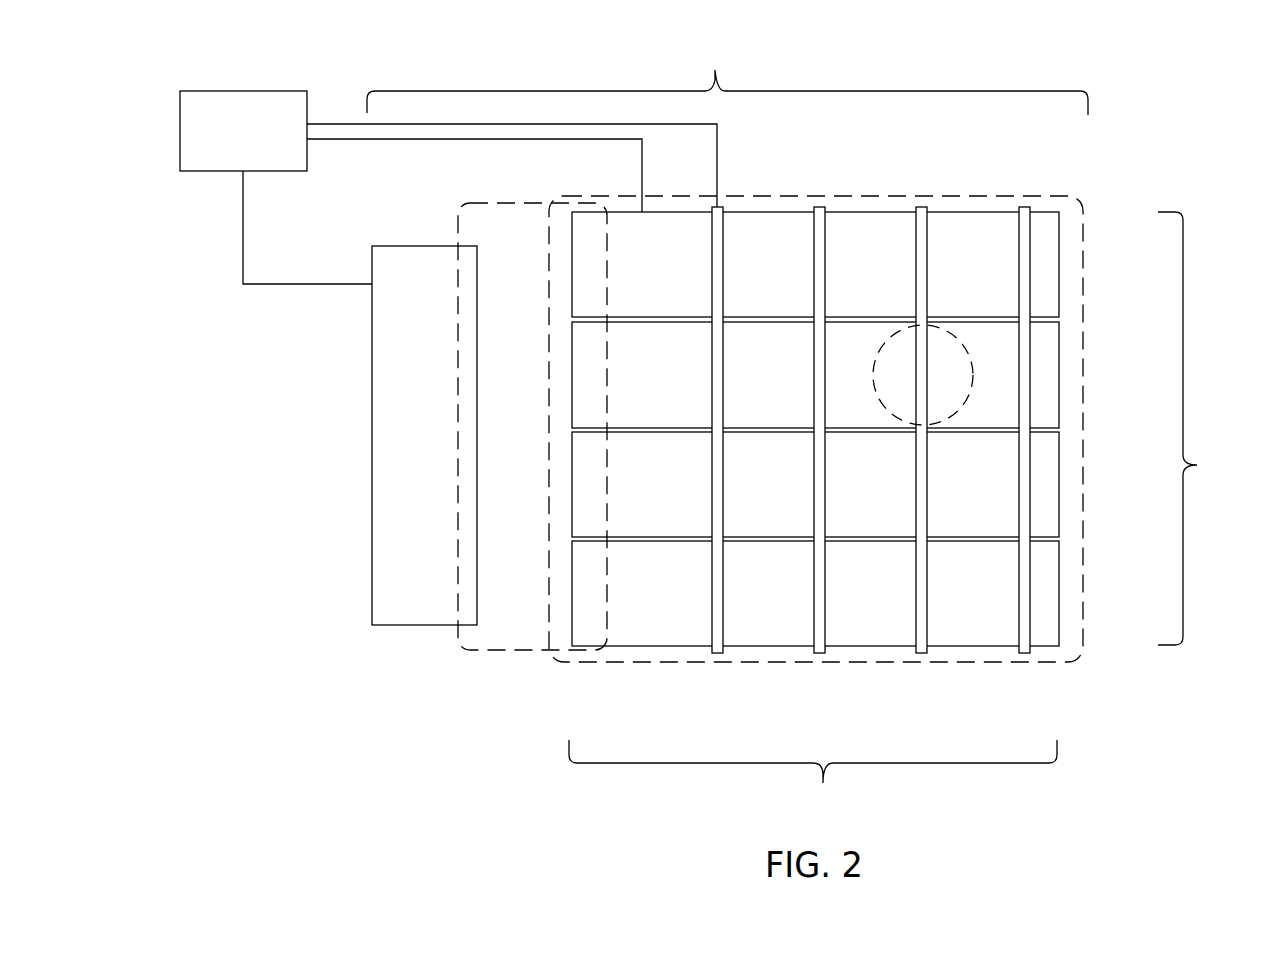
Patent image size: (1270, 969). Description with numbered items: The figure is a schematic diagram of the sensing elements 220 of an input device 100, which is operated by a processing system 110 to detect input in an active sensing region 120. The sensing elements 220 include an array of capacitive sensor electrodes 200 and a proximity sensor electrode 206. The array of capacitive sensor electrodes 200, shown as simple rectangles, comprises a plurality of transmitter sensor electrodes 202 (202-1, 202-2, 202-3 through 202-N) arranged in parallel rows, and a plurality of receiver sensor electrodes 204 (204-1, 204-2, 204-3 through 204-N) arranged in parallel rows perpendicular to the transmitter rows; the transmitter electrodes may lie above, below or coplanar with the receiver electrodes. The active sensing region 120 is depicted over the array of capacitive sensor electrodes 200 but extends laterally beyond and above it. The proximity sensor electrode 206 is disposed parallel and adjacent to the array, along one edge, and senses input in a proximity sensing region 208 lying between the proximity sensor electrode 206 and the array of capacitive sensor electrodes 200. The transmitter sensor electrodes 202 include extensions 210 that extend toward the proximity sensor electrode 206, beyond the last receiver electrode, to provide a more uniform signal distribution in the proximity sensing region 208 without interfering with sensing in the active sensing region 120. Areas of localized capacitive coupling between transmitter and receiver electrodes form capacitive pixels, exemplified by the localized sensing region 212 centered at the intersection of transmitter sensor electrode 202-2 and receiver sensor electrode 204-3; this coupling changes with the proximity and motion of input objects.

The input device 100 is at (324, 88).
The processing system 110 is at (263, 142).
The active sensing region 120 is at (1082, 637).
The array of capacitive sensor electrodes 200 is at (1095, 186).
The transmitter sensor electrodes 202 is at (1197, 465).
The transmitter sensor electrode 202-1 is at (1059, 263).
The transmitter sensor electrode 202-2 is at (1059, 368).
The transmitter sensor electrode 202-3 is at (1059, 479).
The transmitter sensor electrode 202-N is at (1059, 590).
The receiver sensor electrodes 204 is at (823, 783).
The receiver sensor electrode 204-1 is at (720, 655).
The receiver sensor electrode 204-2 is at (822, 655).
The receiver sensor electrode 204-3 is at (924, 655).
The receiver sensor electrode 204-N is at (1027, 655).
The proximity sensor electrode 206 is at (423, 627).
The proximity sensing region 208 is at (532, 652).
The extensions 210 is at (632, 630).
The localized sensing region 212 is at (962, 338).
The sensing elements 220 is at (719, 60).